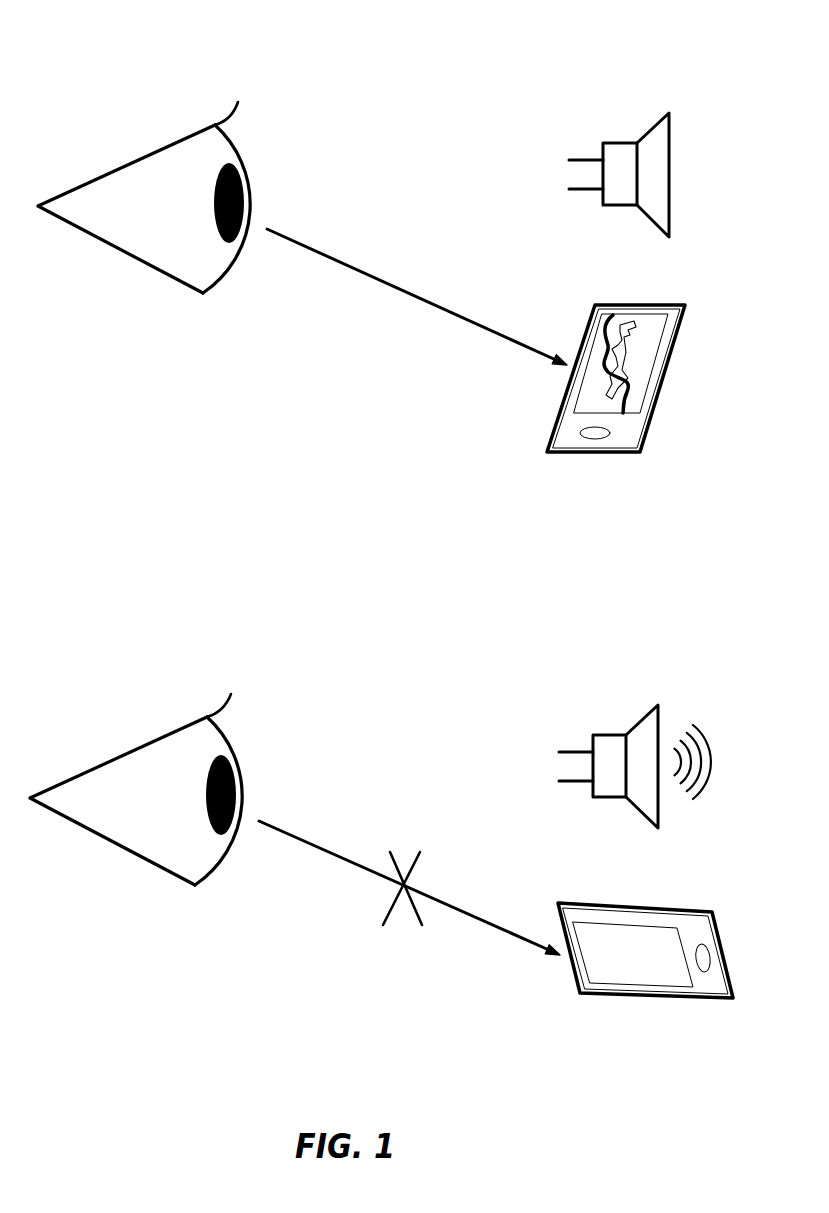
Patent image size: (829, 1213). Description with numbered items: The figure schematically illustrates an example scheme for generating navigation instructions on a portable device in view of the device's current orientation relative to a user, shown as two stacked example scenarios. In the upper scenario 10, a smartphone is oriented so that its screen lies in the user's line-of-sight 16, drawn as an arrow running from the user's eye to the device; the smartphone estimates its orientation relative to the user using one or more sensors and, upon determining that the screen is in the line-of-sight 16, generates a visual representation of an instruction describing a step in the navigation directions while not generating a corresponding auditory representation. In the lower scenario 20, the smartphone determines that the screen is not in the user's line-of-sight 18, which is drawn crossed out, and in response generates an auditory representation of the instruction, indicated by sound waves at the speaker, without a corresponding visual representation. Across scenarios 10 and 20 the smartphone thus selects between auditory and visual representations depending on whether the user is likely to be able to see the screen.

The scenario 10 is at (431, 60).
The line-of-sight 16 is at (445, 312).
The line-of-sight 18 is at (477, 922).
The scenario 20 is at (414, 665).